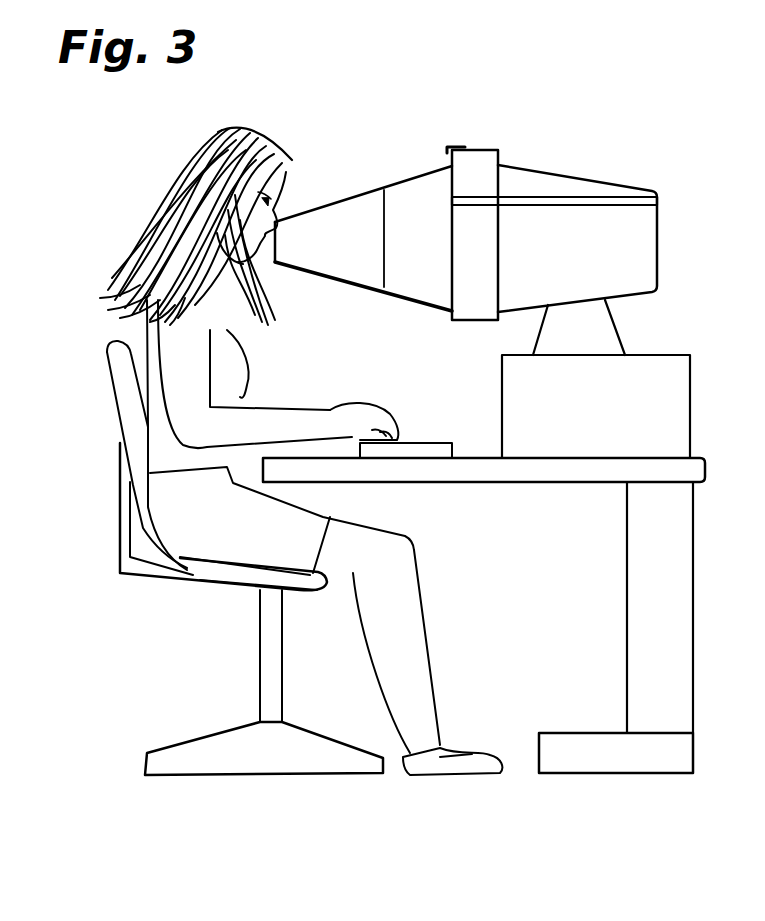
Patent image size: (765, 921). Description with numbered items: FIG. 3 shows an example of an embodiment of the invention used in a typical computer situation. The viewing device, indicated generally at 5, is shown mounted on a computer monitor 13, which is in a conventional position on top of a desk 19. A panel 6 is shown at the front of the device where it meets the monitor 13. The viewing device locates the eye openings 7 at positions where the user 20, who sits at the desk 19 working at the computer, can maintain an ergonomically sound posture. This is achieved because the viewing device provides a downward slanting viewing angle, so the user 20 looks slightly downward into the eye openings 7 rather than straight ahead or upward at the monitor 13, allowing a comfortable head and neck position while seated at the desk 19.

The display hood 5 is at (403, 172).
The panel 6 is at (533, 194).
The eye openings 7 is at (288, 212).
The computer monitor 13 is at (570, 188).
The desk 19 is at (594, 473).
The user 20 is at (177, 335).